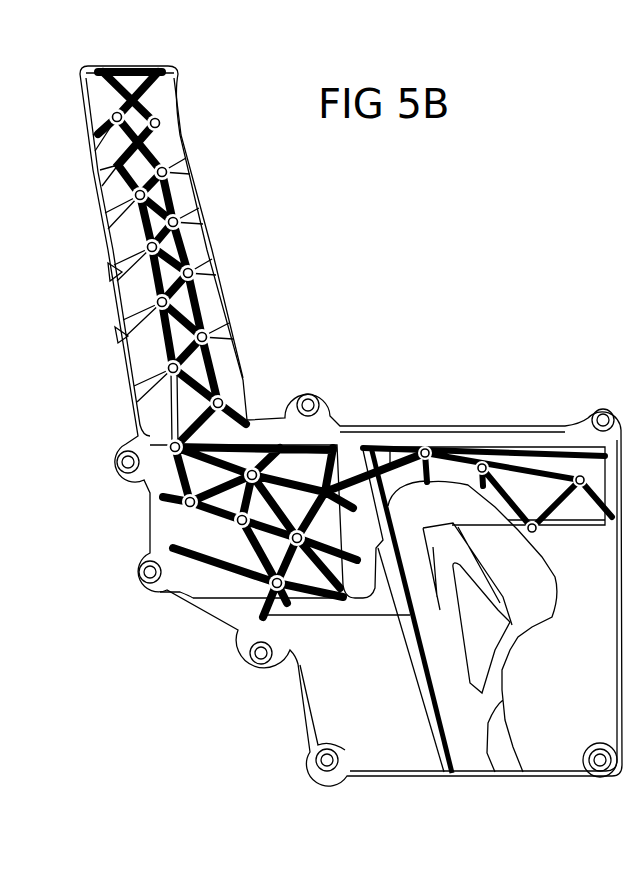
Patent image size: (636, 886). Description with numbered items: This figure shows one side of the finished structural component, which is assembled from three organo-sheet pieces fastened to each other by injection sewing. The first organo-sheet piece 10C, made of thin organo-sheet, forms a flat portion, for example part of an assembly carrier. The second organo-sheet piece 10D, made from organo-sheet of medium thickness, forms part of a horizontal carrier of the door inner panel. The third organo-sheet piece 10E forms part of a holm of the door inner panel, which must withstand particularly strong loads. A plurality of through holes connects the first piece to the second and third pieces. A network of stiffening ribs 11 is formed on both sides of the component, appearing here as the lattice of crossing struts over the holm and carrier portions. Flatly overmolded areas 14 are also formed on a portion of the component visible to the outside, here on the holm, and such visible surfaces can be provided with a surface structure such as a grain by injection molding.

The third organo-sheet piece 10E is at (150, 392).
The stiffening ribs 11 is at (120, 243).
The second organo-sheet piece 10D is at (528, 490).
The first organo-sheet piece 10C is at (335, 702).
The flatly overmolded areas 14 is at (465, 748).